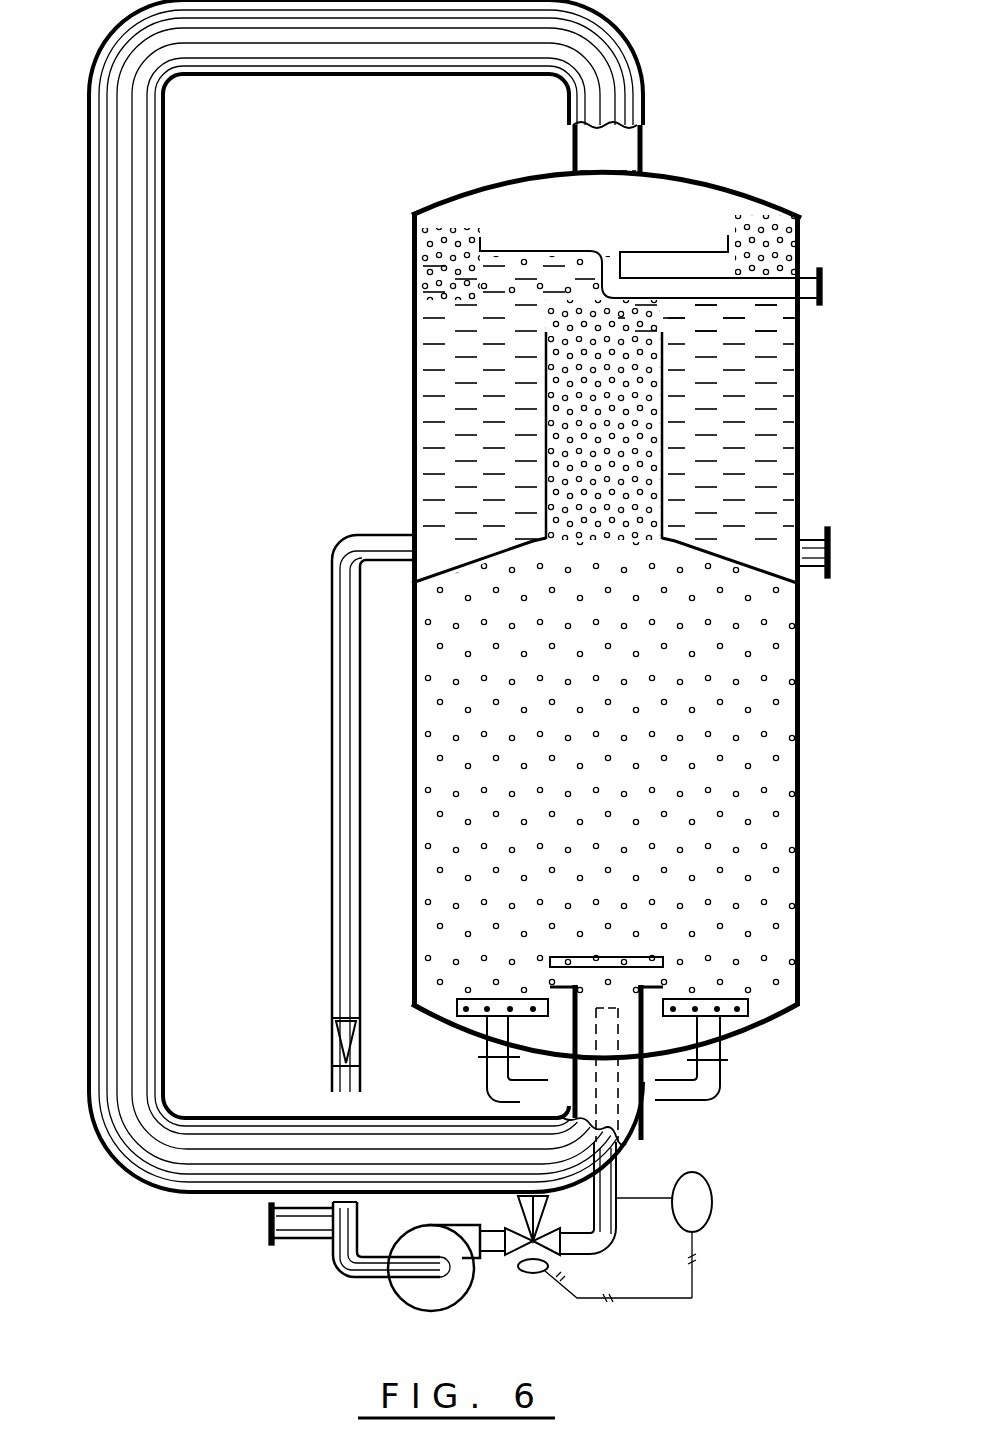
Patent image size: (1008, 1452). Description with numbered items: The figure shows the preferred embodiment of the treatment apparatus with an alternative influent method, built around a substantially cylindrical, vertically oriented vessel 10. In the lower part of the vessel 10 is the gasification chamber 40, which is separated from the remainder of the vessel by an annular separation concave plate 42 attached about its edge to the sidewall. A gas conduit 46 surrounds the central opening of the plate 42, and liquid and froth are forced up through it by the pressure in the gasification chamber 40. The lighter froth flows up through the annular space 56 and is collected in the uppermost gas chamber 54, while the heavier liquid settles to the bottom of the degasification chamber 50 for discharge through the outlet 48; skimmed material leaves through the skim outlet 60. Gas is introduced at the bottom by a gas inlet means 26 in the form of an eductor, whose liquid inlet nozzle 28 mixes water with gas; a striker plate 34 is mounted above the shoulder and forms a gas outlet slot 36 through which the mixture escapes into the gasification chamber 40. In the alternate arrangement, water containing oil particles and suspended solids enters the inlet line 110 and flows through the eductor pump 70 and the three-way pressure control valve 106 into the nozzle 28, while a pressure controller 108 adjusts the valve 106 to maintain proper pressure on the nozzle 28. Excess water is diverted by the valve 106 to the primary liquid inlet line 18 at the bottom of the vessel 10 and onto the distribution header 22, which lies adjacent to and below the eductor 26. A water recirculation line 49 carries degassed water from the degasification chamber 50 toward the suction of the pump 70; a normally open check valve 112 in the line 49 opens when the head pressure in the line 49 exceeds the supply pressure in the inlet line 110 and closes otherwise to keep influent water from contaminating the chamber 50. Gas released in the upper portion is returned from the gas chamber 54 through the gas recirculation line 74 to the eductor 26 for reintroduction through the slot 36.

The vessel 10 is at (722, 98).
The liquid inlet distribution line 18 is at (482, 1058).
The distribution header 22 is at (458, 1014).
The gas inlet means 26 is at (645, 1125).
The liquid inlet nozzle 28 is at (622, 1040).
The striker plate 34 is at (622, 958).
The gas outlet slot 36 is at (556, 985).
The gasification chamber 40 is at (750, 680).
The annular separation concave plate 42 is at (713, 550).
The gas conduit 46 is at (545, 457).
The outlet 48 is at (812, 537).
The water recirculation line 49 is at (342, 672).
The degasification chamber 50 is at (797, 372).
The gas chamber 54 is at (579, 215).
The annular space 56 is at (440, 232).
The skim outlet 60 is at (812, 268).
The eductor pump 70 is at (392, 1298).
The gas recirculation line 74 is at (268, 1118).
The three-way pressure control valve 106 is at (518, 1272).
The pressure controller 108 is at (712, 1196).
The inlet line 110 is at (268, 1222).
The check valve 112 is at (336, 1015).